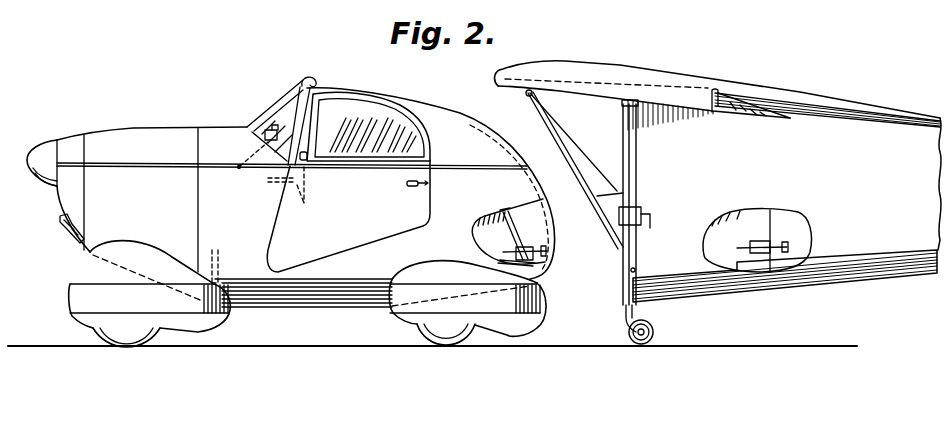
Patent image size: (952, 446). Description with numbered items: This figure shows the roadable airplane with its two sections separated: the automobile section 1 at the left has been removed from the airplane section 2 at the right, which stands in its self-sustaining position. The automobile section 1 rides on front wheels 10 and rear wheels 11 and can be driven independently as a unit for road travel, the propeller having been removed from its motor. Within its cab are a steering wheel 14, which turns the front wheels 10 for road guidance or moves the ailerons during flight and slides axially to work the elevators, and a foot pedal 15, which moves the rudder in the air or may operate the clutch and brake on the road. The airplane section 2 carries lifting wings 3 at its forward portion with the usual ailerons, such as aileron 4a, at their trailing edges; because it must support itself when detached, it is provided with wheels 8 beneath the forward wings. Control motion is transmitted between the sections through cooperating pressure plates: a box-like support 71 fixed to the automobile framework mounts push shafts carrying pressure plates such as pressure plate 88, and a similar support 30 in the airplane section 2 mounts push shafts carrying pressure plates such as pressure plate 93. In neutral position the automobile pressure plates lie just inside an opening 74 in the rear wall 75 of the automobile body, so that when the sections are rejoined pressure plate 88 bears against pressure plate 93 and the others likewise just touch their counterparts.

The automobile section 1 is at (141, 129).
The airplane section 2 is at (869, 99).
The lifting wings 3 is at (565, 73).
The aileron 4a is at (751, 110).
The wheels 8 is at (655, 331).
The front wheels 10 is at (158, 333).
The rear wheels 11 is at (415, 328).
The steering wheel 14 is at (308, 155).
The foot pedal 15 is at (216, 250).
The support 30 is at (762, 243).
The box-like support 71 is at (516, 250).
The opening 74 is at (557, 248).
The rear wall 75 is at (551, 217).
The pressure plate 88 is at (536, 246).
The pressure plate 93 is at (740, 249).